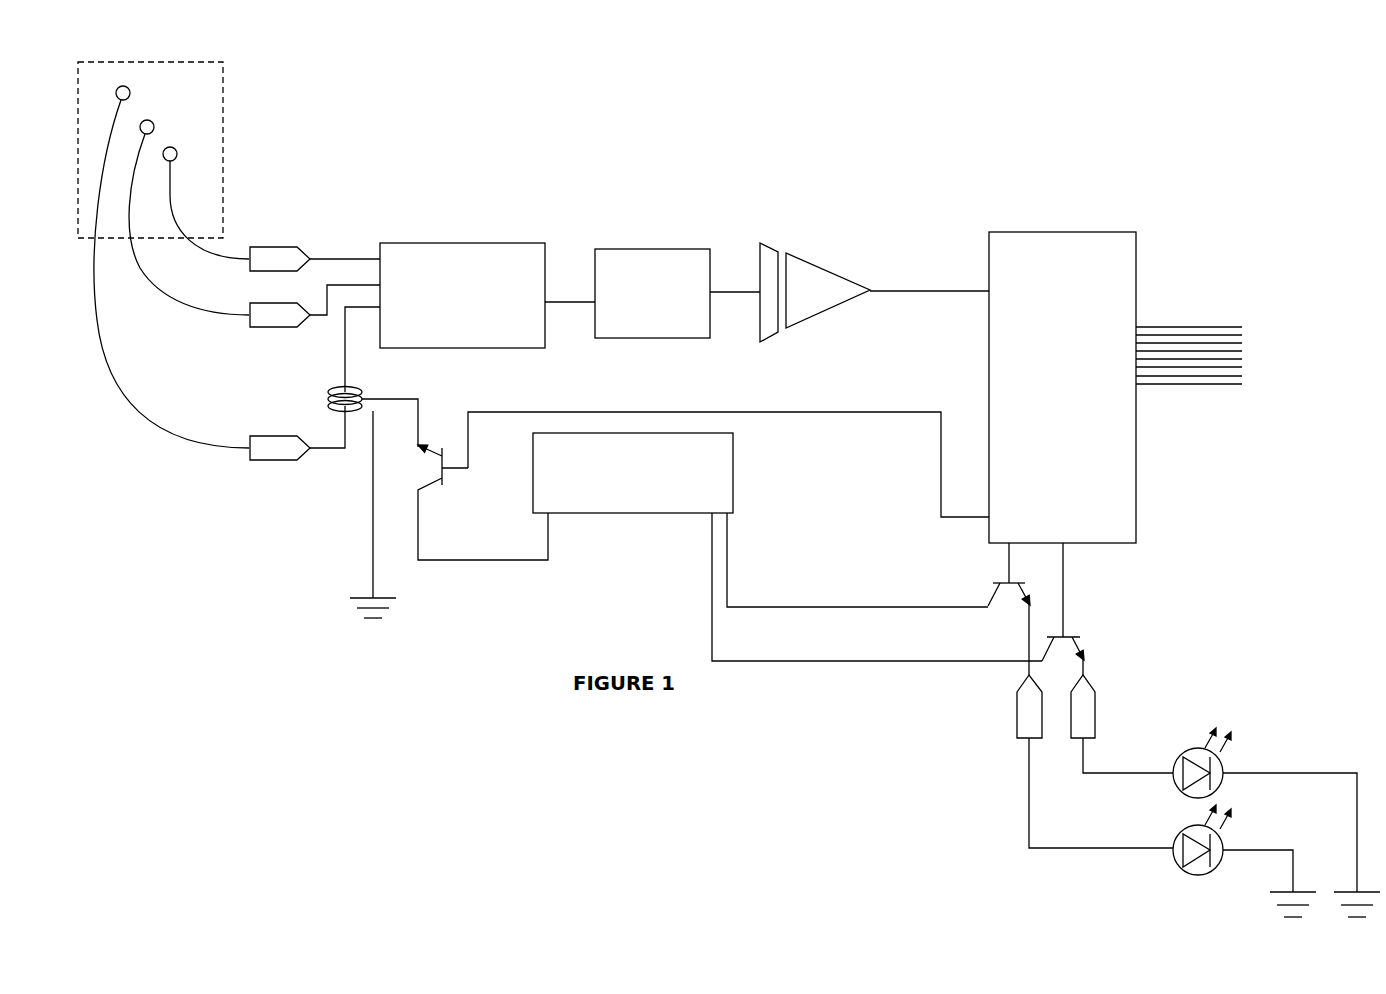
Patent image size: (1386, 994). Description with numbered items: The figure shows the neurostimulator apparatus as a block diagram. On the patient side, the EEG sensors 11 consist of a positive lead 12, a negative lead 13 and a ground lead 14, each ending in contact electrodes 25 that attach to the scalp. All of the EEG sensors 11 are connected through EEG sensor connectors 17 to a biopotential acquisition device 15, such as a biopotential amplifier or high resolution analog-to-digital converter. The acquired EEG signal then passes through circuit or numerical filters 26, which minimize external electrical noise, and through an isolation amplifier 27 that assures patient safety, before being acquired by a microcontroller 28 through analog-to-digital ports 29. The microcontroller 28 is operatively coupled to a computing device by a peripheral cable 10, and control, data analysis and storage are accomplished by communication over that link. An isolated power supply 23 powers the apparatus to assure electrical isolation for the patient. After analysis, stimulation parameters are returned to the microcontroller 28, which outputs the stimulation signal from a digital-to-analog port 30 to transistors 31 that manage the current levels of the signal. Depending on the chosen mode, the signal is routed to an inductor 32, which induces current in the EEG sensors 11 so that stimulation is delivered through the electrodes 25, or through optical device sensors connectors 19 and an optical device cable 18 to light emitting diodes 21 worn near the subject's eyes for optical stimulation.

The peripheral cable 10 is at (1175, 318).
The EEG sensors 11 is at (230, 155).
The positive lead 12 is at (228, 252).
The negative lead 13 is at (178, 310).
The ground lead 14 is at (158, 417).
The biopotential acquisition device 15 is at (454, 233).
The EEG sensor connectors 17 is at (307, 246).
The optical device cable 18 is at (1112, 780).
The optical device sensors connectors 19 is at (1063, 740).
The light emitting diodes 21 is at (1233, 835).
The isolated power supply 23 is at (627, 518).
The contact electrodes 25 is at (133, 94).
The circuit or numerical filters 26 is at (645, 240).
The isolation amplifier 27 is at (798, 247).
The microcontroller 28 is at (1143, 245).
The analog-to-digital ports 29 is at (985, 298).
The digital-to-analog port 30 is at (1057, 550).
The transistors 31 is at (438, 432).
The inductor 32 is at (336, 422).